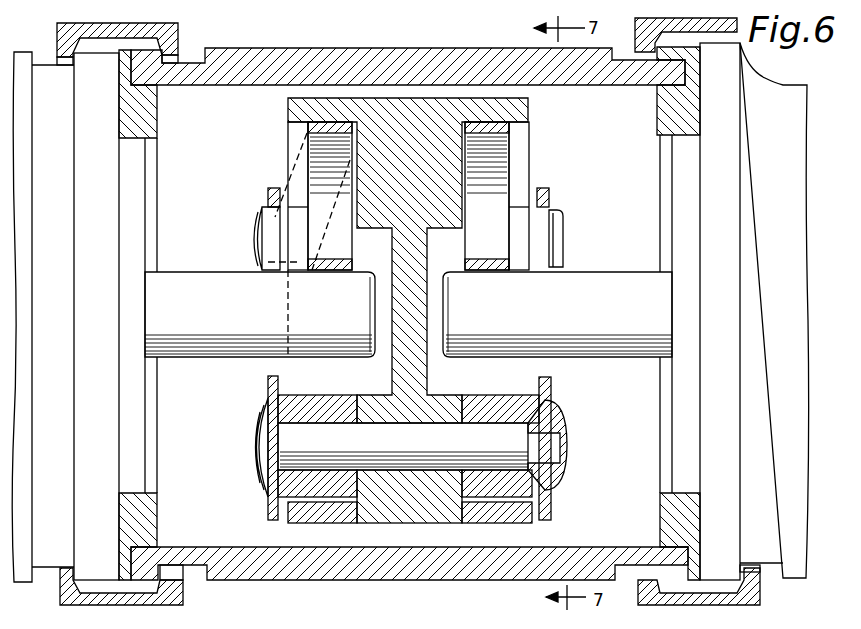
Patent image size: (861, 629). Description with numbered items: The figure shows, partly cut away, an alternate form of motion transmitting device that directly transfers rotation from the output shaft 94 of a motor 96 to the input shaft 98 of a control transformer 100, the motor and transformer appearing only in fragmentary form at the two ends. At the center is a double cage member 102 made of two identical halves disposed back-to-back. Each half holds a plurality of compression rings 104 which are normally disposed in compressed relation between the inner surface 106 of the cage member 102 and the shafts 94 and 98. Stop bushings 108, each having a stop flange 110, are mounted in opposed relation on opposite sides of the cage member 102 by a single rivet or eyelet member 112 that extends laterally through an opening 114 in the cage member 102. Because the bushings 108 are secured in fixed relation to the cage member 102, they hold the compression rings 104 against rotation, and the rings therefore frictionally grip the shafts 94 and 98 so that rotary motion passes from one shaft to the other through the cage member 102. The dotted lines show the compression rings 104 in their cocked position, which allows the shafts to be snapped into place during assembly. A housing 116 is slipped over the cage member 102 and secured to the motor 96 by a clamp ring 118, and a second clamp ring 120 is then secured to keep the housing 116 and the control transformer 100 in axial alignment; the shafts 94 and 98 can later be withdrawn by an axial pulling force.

The output shaft 94 is at (246, 307).
The motor 96 is at (25, 583).
The input shaft 98 is at (589, 304).
The control transformer 100 is at (796, 580).
The double cage member 102 is at (428, 97).
The compression rings 104 is at (312, 148).
The inner surface 106 is at (305, 127).
The stop bushings 108 is at (270, 190).
The stop flange 110 is at (266, 383).
The rivet or eyelet member 112 is at (266, 494).
The opening 114 is at (393, 468).
The housing 116 is at (266, 581).
The clamp ring 118 is at (118, 596).
The clamp ring 120 is at (706, 606).